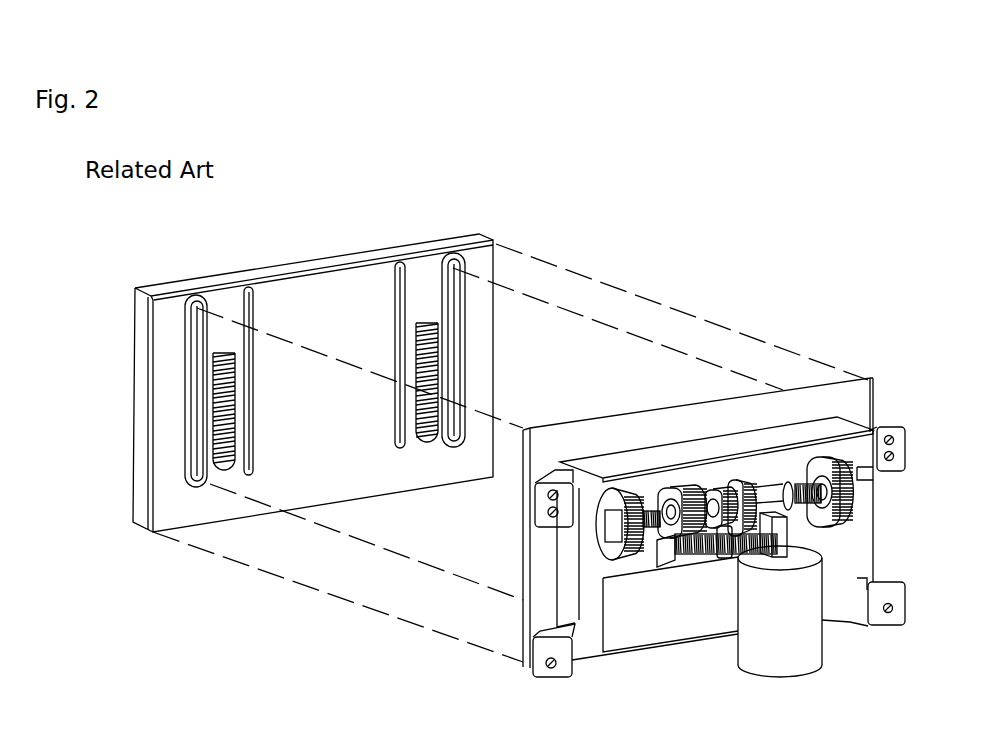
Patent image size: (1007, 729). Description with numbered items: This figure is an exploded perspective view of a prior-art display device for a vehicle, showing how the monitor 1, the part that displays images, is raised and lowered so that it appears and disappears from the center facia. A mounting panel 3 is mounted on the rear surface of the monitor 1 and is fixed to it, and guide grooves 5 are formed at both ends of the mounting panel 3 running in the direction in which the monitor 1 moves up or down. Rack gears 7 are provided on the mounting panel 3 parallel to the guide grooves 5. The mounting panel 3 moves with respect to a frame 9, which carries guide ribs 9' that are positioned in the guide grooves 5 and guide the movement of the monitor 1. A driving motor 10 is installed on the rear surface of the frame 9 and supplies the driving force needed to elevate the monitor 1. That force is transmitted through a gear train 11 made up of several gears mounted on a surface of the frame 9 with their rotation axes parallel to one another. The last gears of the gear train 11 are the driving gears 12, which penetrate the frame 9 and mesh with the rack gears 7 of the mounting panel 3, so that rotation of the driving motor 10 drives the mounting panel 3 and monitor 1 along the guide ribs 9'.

The monitor 1 is at (146, 351).
The mounting panel 3 is at (300, 285).
The guide grooves 5 is at (193, 410).
The rack gears 7 is at (227, 353).
The frame 9 is at (716, 516).
The guide ribs 9' is at (510, 454).
The driving motor 10 is at (753, 643).
The gear train 11 is at (735, 548).
The driving gears 12 is at (857, 492).